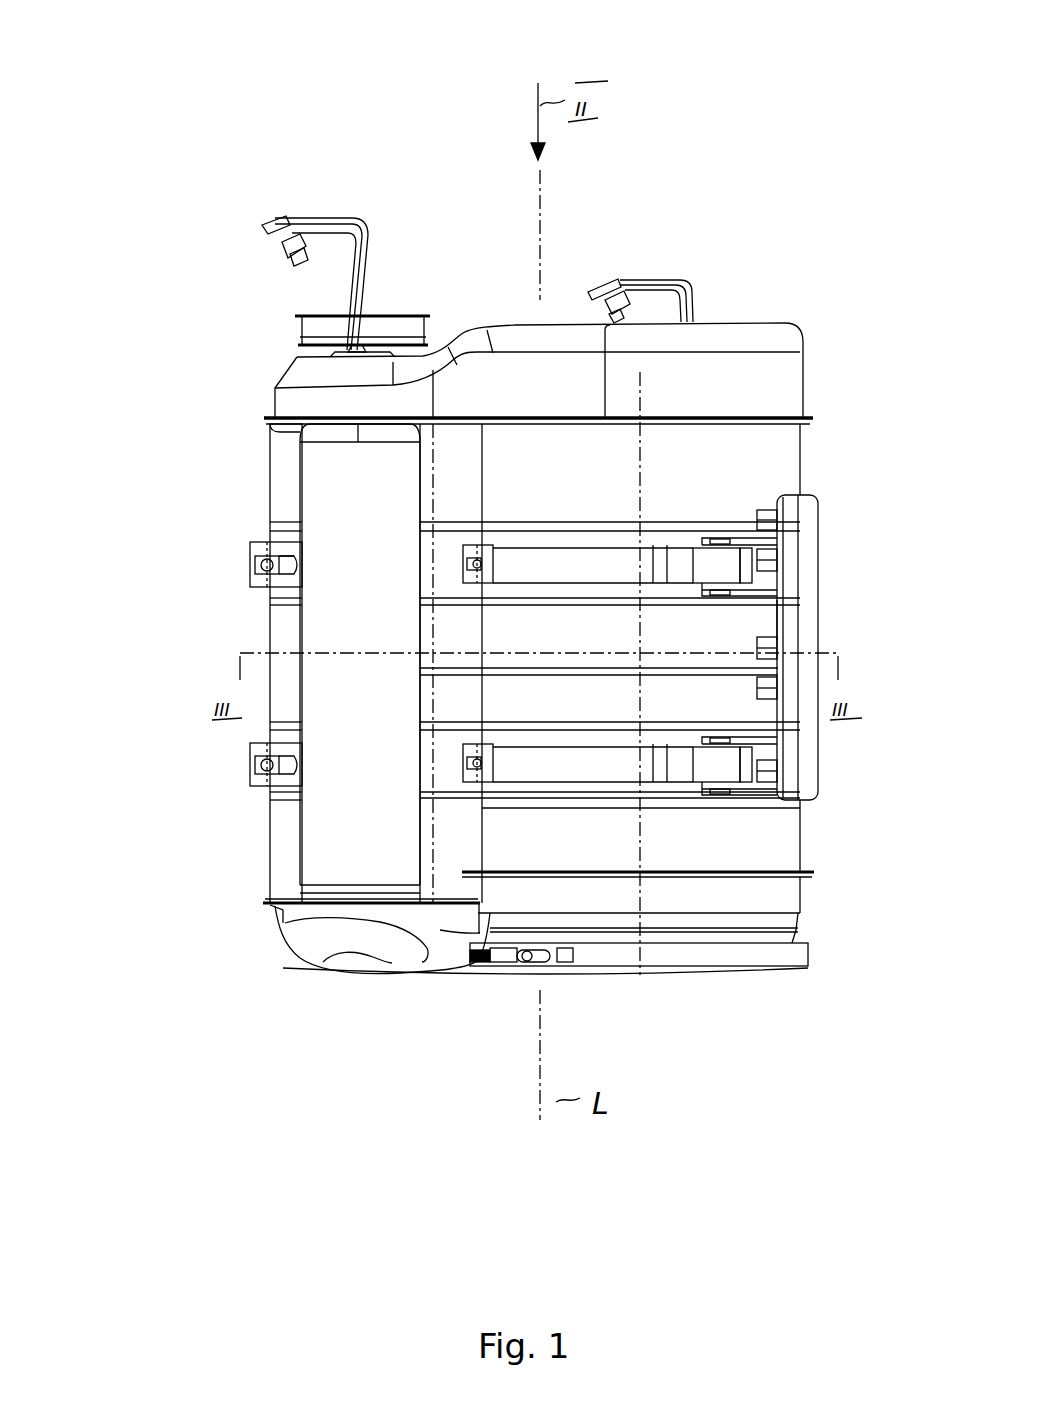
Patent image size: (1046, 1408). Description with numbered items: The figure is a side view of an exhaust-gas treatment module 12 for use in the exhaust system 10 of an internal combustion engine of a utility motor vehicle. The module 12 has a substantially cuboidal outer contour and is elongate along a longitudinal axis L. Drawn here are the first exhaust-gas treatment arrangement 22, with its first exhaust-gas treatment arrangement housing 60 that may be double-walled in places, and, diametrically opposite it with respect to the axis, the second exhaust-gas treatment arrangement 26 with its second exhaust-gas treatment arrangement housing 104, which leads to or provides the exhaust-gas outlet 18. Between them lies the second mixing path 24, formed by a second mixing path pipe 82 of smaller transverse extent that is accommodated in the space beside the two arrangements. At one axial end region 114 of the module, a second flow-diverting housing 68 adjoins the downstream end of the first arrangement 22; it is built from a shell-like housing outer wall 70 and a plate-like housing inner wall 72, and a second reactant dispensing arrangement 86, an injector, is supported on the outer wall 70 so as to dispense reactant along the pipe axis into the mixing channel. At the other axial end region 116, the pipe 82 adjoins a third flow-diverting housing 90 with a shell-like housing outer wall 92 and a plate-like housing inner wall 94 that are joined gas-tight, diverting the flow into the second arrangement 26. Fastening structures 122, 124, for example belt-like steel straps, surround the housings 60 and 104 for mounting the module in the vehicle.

The exhaust system 10 is at (144, 62).
The exhaust-gas treatment module 12 is at (828, 95).
The exhaust-gas outlet 18 is at (386, 318).
The first exhaust-gas treatment arrangement 22 is at (812, 467).
The second mixing path 24 is at (282, 625).
The second exhaust-gas treatment arrangement 26 is at (236, 491).
The first exhaust-gas treatment arrangement housing 60 is at (808, 824).
The second flow-diverting housing 68 is at (746, 326).
The housing outer wall 70 is at (806, 350).
The housing inner wall 72 is at (286, 427).
The second mixing path pipe 82 is at (302, 830).
The second reactant dispensing arrangement 86 is at (302, 345).
The third flow-diverting housing 90 is at (446, 972).
The housing outer wall 92 is at (362, 976).
The housing inner wall 94 is at (282, 901).
The second exhaust-gas treatment arrangement housing 104 is at (266, 504).
The axial end region 114 is at (652, 246).
The axial end region 116 is at (663, 1020).
The fastening structure 122 is at (850, 568).
The fastening structure 124 is at (216, 777).